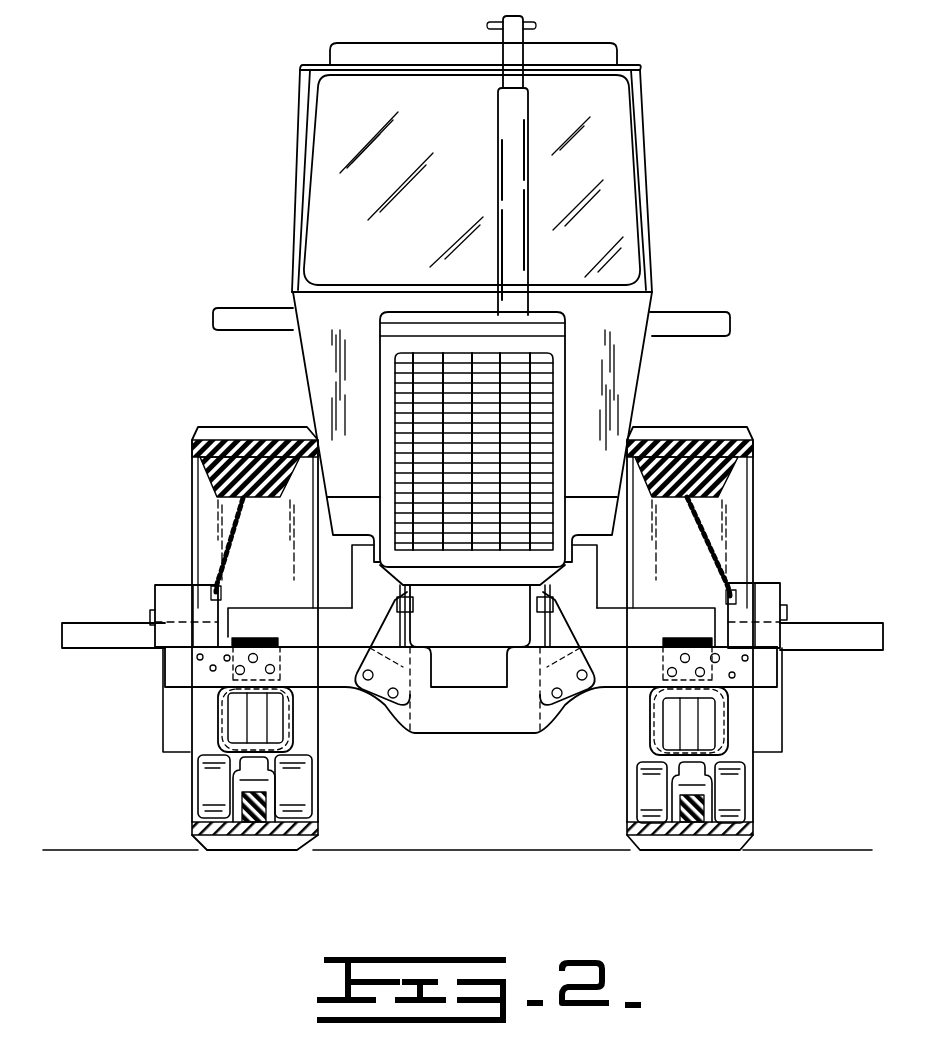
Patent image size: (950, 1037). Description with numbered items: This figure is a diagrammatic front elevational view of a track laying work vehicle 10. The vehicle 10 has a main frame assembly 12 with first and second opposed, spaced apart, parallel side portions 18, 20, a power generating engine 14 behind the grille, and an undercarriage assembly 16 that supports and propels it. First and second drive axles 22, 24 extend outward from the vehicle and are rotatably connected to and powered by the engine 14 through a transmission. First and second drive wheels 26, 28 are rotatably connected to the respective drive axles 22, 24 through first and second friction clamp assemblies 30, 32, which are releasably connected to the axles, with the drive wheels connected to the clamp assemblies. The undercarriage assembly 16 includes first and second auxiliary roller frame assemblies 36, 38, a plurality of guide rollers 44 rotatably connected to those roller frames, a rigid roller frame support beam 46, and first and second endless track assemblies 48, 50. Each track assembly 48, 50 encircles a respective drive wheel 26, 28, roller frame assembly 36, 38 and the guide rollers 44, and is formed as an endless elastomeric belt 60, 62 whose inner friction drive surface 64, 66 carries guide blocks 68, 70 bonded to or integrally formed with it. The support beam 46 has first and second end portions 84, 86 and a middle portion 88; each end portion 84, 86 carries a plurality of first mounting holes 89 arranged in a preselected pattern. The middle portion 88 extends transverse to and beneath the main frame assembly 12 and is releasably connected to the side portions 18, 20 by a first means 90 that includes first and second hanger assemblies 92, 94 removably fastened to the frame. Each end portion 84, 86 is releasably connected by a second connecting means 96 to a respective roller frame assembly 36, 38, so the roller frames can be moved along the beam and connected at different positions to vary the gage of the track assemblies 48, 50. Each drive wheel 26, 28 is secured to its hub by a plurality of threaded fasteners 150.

The track laying work vehicle 10 is at (672, 162).
The main frame assembly 12 is at (380, 578).
The engine 14 is at (553, 353).
The undercarriage assembly 16 is at (177, 765).
The first side portion 18 is at (413, 605).
The second side portion 20 is at (540, 600).
The first drive axle 22 is at (75, 645).
The second drive axle 24 is at (865, 630).
The first drive wheel 26 is at (212, 483).
The second drive wheel 28 is at (735, 498).
The first friction clamp assembly 30 is at (154, 584).
The second friction clamp assembly 32 is at (775, 582).
The first auxiliary roller frame assembly 36 is at (222, 715).
The second auxiliary roller frame assembly 38 is at (722, 710).
The guide rollers 44 is at (208, 792).
The rigid roller frame support beam 46 is at (640, 630).
The first endless track assembly 48 is at (237, 845).
The second endless track assembly 50 is at (722, 845).
The first endless elastomeric belt 60 is at (320, 828).
The second endless elastomeric belt 62 is at (625, 829).
The first inner friction drive surface 64 is at (312, 805).
The second inner friction drive surface 66 is at (753, 815).
The first guide blocks 68 is at (267, 834).
The second guide blocks 70 is at (688, 838).
The first end portion of support beam 84 is at (165, 682).
The second end portion of support beam 86 is at (780, 670).
The middle portion of support beam 88 is at (483, 697).
The first mounting holes 89 is at (200, 657).
The first means 90 is at (355, 654).
The first hanger assembly 92 is at (384, 674).
The second hanger assembly 94 is at (571, 604).
The second connecting means 96 is at (255, 636).
The threaded fasteners 150 is at (232, 565).